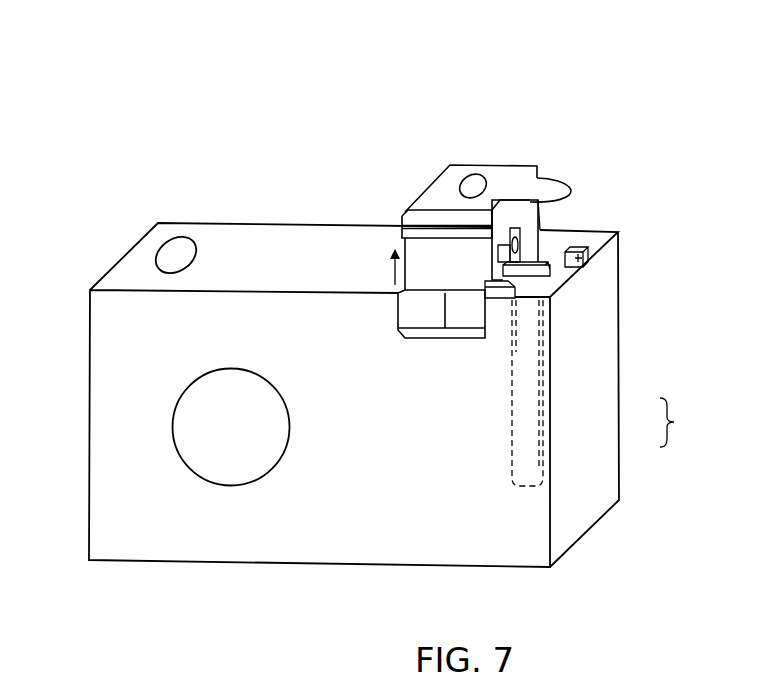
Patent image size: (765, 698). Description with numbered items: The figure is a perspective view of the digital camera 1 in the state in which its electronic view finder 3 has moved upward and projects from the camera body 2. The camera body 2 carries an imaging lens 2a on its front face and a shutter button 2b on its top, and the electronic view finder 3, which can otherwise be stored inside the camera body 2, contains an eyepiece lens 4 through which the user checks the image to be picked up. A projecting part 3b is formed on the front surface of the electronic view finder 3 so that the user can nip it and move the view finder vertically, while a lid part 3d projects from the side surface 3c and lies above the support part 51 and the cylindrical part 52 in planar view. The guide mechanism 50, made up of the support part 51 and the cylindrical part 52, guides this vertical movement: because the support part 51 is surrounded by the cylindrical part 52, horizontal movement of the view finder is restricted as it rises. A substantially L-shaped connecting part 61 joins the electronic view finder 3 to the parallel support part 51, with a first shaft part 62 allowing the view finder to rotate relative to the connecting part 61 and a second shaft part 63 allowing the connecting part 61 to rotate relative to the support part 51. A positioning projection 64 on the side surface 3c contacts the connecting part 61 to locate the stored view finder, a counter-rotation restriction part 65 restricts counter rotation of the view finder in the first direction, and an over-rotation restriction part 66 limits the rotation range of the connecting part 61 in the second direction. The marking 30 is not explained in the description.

The digital camera 1 is at (513, 88).
The camera body 2 is at (103, 426).
The imaging lens 2a is at (231, 486).
The shutter button 2b is at (176, 252).
The electronic view finder 3 is at (430, 197).
The projecting part 3b is at (402, 227).
The side surface 3c is at (508, 218).
The lid part 3d is at (548, 190).
The eyepiece lens 4 is at (473, 183).
The gap / contact line 30 is at (413, 215).
The guide mechanism 50 is at (684, 422).
The support part 51 is at (545, 352).
The cylindrical part 52 is at (543, 425).
The connecting part 61 is at (548, 274).
The first shaft part 62 is at (540, 245).
The second shaft part 63 is at (537, 267).
The positioning projection 64 is at (537, 213).
The counter-rotation restriction part 65 is at (502, 290).
The over-rotation restriction part 66 is at (582, 258).